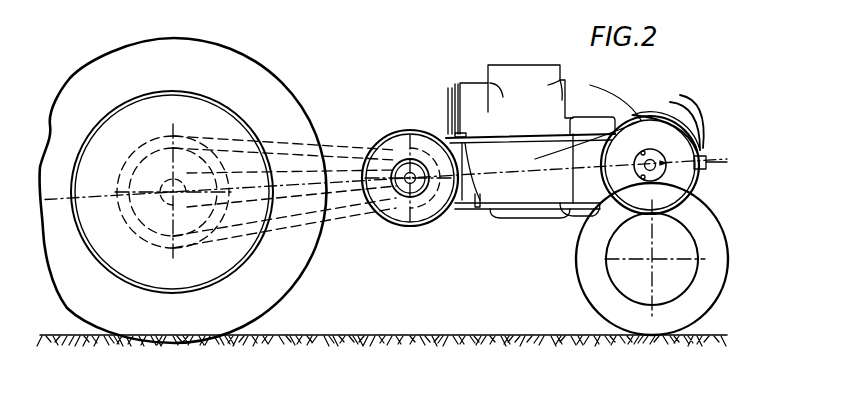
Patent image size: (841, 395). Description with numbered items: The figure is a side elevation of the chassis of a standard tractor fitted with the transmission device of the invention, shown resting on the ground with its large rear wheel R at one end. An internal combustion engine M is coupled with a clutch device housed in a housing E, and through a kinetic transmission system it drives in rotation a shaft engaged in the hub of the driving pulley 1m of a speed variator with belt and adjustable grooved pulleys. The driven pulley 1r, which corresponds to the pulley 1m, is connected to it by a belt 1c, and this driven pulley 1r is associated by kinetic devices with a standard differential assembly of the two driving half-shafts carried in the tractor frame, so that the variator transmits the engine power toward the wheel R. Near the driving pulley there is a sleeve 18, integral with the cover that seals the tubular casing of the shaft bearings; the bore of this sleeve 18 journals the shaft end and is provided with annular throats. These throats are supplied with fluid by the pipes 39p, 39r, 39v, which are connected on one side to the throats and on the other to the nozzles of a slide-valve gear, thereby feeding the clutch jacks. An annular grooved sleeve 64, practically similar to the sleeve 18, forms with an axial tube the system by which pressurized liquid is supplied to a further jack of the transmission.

The drive wheel R is at (263, 82).
The driven pulley 1r is at (417, 135).
The internal combustion engine M is at (510, 101).
The housing E is at (592, 122).
The belt 1c is at (519, 140).
The pipe 39p is at (662, 112).
The pipe 39v is at (690, 108).
The pipe 39r is at (705, 125).
The annular grooved sleeve 64 is at (655, 156).
The sleeve 18 is at (704, 170).
The driving pulley 1m is at (679, 175).